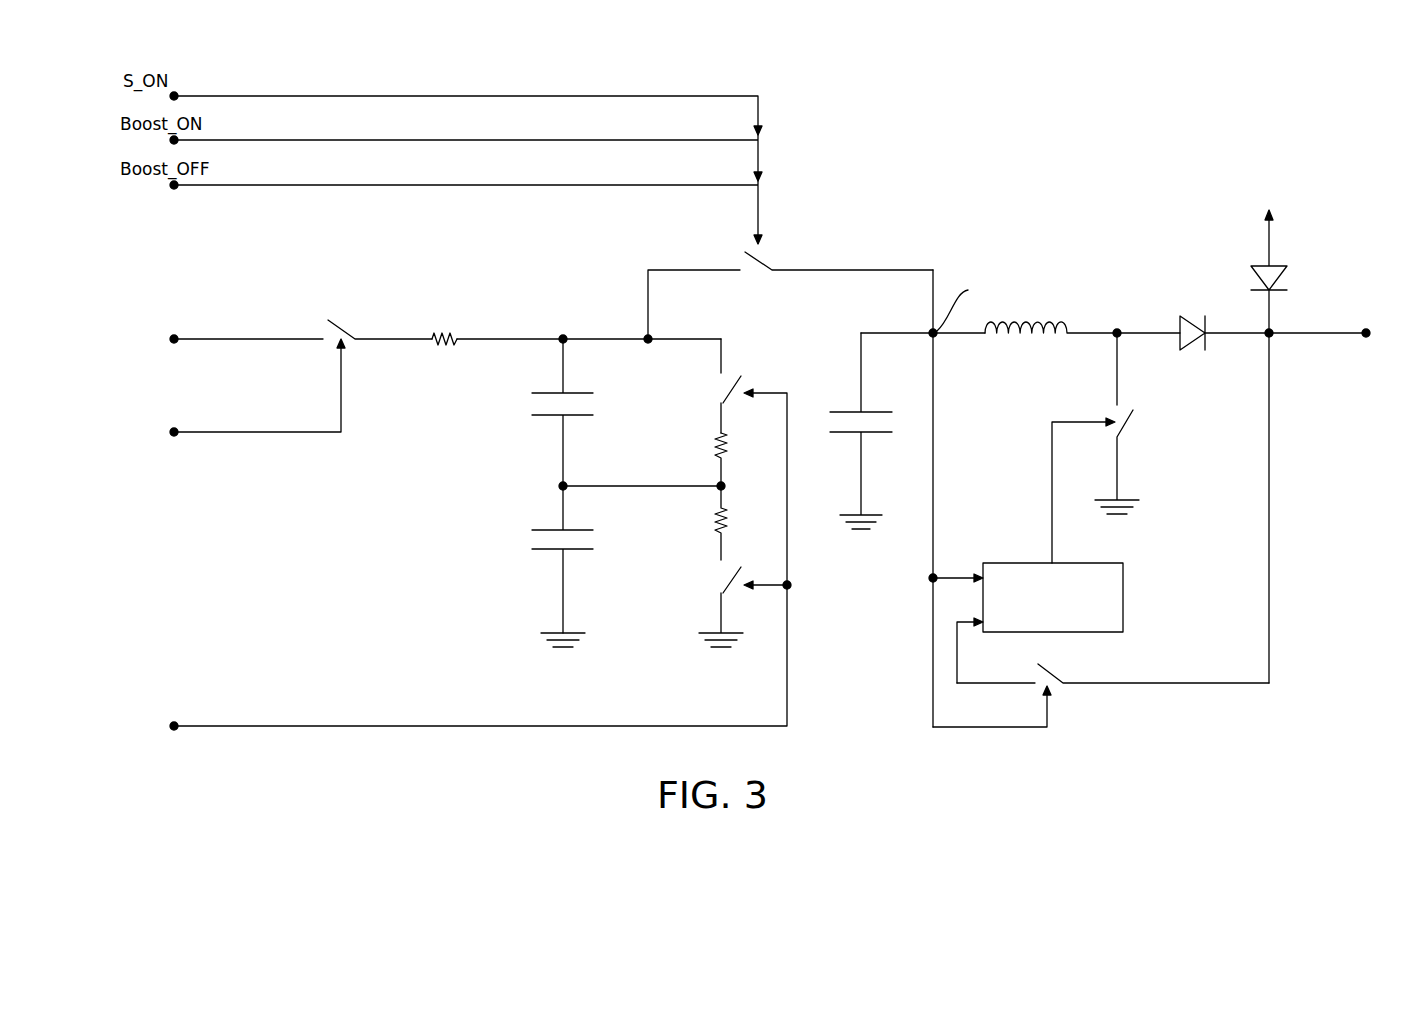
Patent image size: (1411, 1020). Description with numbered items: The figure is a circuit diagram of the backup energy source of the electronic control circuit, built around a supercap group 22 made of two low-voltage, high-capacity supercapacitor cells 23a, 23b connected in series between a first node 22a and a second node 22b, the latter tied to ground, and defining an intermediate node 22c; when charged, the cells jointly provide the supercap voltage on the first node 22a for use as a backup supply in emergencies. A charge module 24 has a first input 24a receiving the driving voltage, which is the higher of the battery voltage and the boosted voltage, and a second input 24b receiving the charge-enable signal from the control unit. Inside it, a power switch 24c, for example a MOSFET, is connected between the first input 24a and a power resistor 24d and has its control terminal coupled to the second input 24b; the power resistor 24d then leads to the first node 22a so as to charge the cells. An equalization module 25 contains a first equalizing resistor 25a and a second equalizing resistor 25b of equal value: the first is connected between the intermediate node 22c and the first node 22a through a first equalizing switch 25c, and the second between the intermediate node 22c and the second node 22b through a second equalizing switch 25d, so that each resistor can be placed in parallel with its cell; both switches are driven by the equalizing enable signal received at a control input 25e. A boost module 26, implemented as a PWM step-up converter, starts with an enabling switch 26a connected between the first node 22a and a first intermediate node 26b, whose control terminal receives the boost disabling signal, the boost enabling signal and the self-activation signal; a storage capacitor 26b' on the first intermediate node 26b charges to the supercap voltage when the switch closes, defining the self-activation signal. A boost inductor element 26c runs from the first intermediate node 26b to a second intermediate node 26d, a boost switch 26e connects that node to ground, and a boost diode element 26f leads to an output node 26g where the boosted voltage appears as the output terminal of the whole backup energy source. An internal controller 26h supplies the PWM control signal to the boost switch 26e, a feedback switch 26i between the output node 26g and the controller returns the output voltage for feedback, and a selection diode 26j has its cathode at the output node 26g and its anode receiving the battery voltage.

The supercap group 22 is at (502, 482).
The first node 22a is at (561, 336).
The second node 22b is at (565, 631).
The intermediate node 22c is at (566, 489).
The first supercapacitor cell 23a is at (532, 405).
The second supercapacitor cell 23b is at (532, 544).
The charge module 24 is at (364, 444).
The first input 24a is at (172, 344).
The second input 24b is at (174, 437).
The power switch 24c is at (340, 323).
The power resistor 24d is at (444, 346).
The equalization module 25 is at (755, 352).
The first equalizing resistor 25a is at (716, 440).
The second equalizing resistor 25b is at (716, 516).
The first equalizing switch 25c is at (727, 390).
The second equalizing switch 25d is at (727, 580).
The control input 25e is at (173, 731).
The boost module 26 is at (1059, 258).
The enabling switch 26a is at (758, 264).
The first intermediate node 26b is at (939, 498).
The storage capacitor 26b' is at (849, 431).
The boost inductor element 26c is at (1010, 346).
The second intermediate node 26d is at (1118, 328).
The boost switch 26e is at (1125, 425).
The boost diode element 26f is at (1186, 322).
The output node 26g is at (1272, 337).
The internal controller 26h is at (1122, 571).
The feedback switch 26i is at (1052, 676).
The selection diode 26j is at (1277, 283).